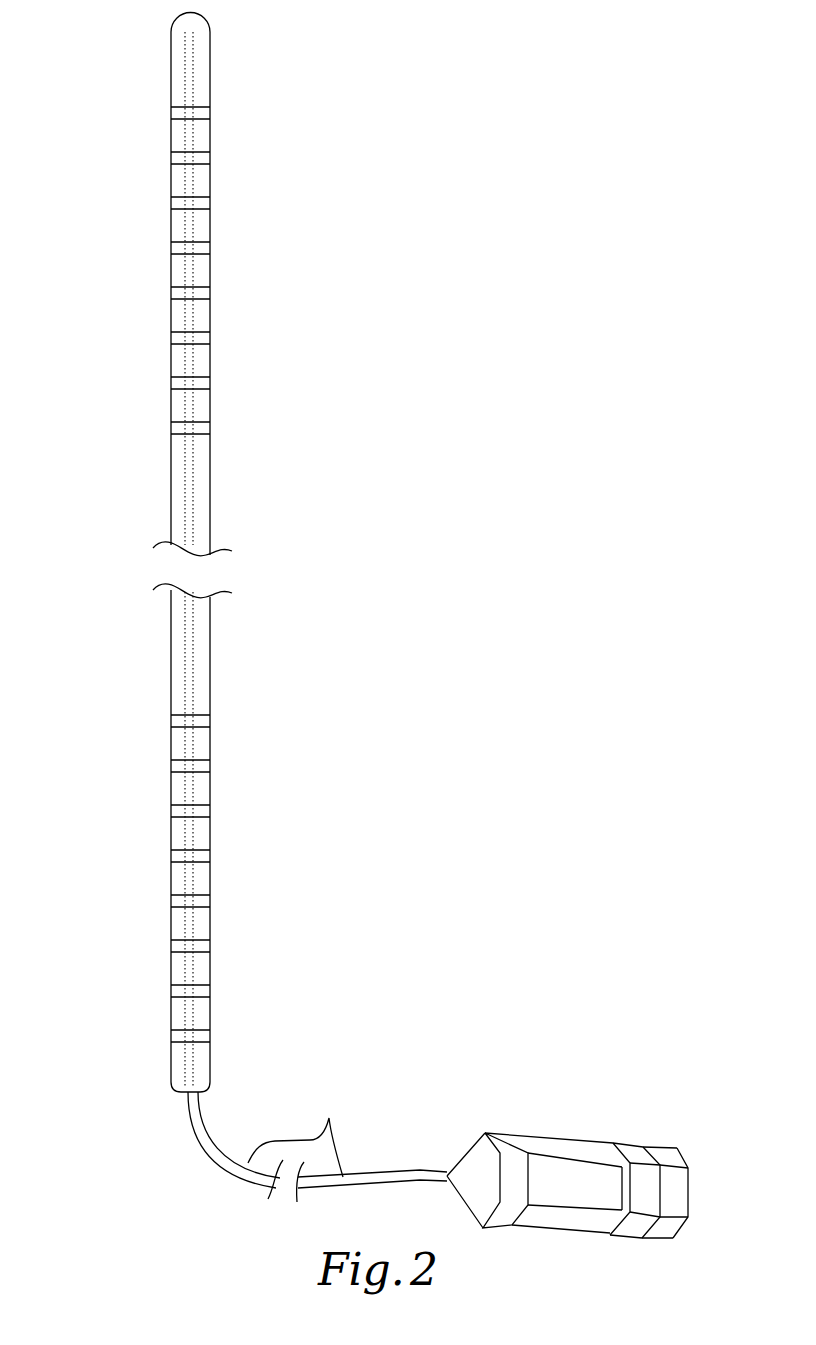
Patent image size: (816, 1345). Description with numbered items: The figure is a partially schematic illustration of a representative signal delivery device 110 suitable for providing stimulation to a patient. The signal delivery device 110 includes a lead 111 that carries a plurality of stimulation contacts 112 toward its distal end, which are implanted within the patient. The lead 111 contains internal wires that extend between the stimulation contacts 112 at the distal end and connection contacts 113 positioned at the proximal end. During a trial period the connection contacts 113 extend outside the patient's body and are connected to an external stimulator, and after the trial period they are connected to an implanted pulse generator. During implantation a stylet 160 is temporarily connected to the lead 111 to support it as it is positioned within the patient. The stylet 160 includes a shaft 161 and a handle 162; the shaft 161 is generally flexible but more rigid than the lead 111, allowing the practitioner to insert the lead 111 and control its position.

The signal delivery device 110 is at (320, 312).
The lead 111 is at (212, 85).
The stimulation contacts 112 is at (170, 113).
The connection contacts 113 is at (210, 719).
The stylet 160 is at (438, 1110).
The shaft 161 is at (317, 1146).
The handle 162 is at (558, 1148).